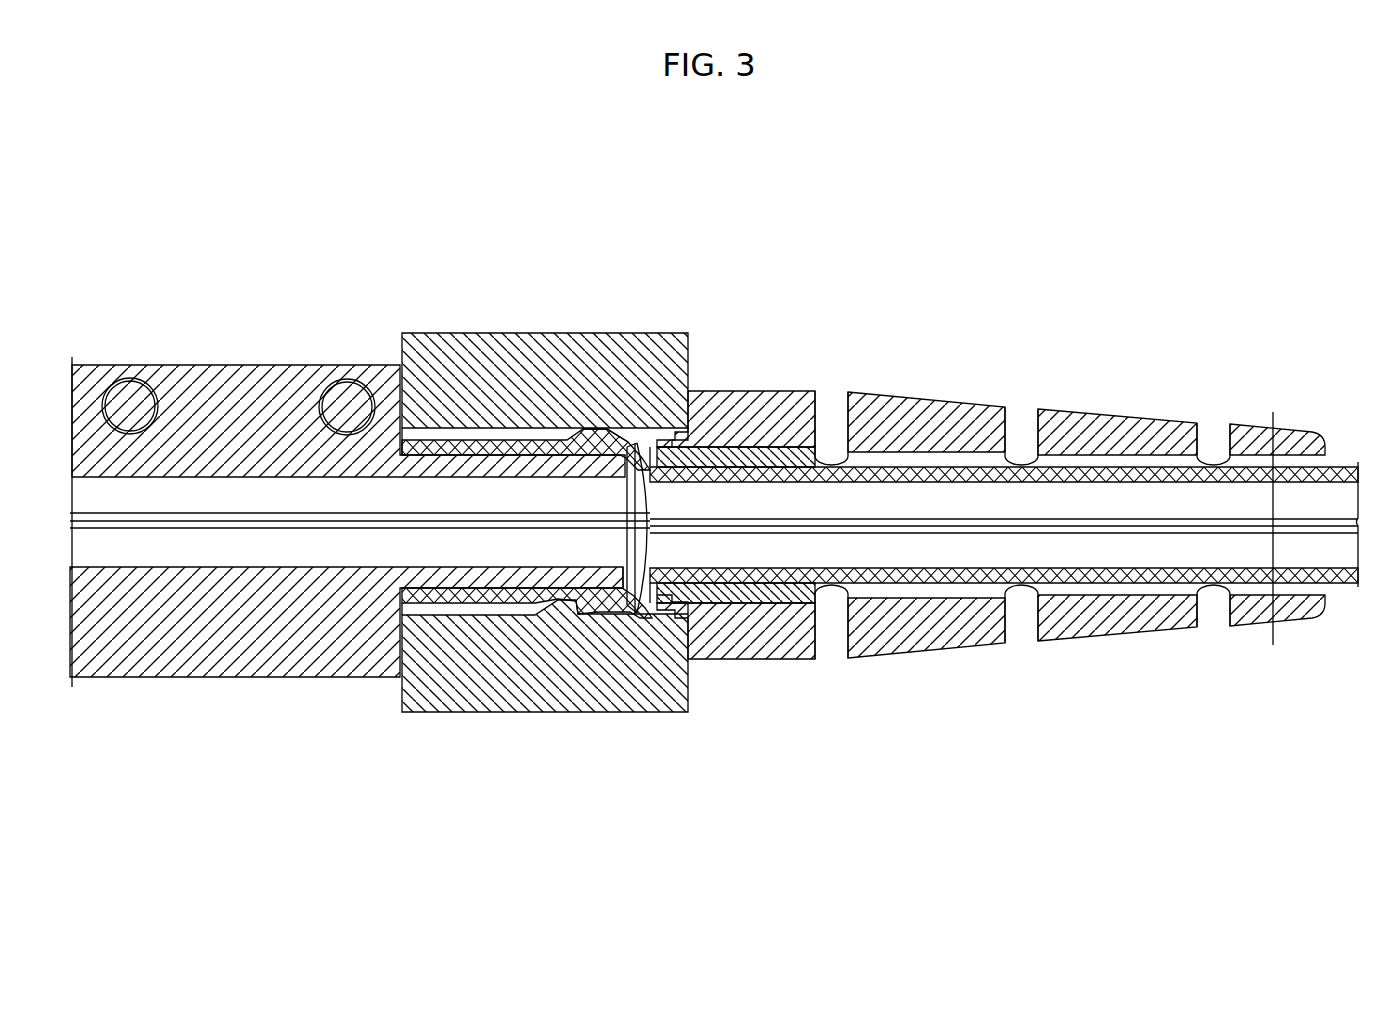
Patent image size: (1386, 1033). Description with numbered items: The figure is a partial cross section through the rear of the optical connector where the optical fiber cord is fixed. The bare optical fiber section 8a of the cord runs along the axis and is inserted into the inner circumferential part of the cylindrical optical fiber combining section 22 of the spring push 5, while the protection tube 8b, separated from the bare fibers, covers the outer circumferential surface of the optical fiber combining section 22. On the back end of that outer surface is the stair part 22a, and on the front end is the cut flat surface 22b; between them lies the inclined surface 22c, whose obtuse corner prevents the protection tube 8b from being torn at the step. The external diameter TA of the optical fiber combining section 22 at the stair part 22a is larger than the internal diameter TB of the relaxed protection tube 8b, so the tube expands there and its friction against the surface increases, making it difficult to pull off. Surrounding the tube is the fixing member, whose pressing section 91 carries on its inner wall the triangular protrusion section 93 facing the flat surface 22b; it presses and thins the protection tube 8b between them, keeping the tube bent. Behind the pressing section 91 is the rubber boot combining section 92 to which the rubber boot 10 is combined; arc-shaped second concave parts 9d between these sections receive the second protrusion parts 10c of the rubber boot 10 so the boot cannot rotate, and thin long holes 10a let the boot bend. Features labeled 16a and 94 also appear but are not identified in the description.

The spring push 5 is at (219, 364).
The bare optical fiber section 8a is at (330, 542).
The protection tube 8b is at (465, 430).
The tongue end 16a is at (422, 565).
The optical fiber combining section 22 is at (467, 458).
The stair part 22a is at (597, 472).
The flat surface 22b is at (528, 462).
The inclined surface 22c is at (566, 472).
The pressing section 91 is at (660, 334).
The rubber boot combining section 92 is at (743, 458).
The protrusion section 93 is at (561, 432).
The shield portion 94 is at (596, 432).
The second concave part 9d is at (690, 433).
The rubber boot 10 is at (958, 412).
The thin long hole 10a is at (1008, 412).
The second protrusion part 10c is at (674, 484).
The external diameter TA is at (614, 722).
The internal diameter TB is at (1274, 515).